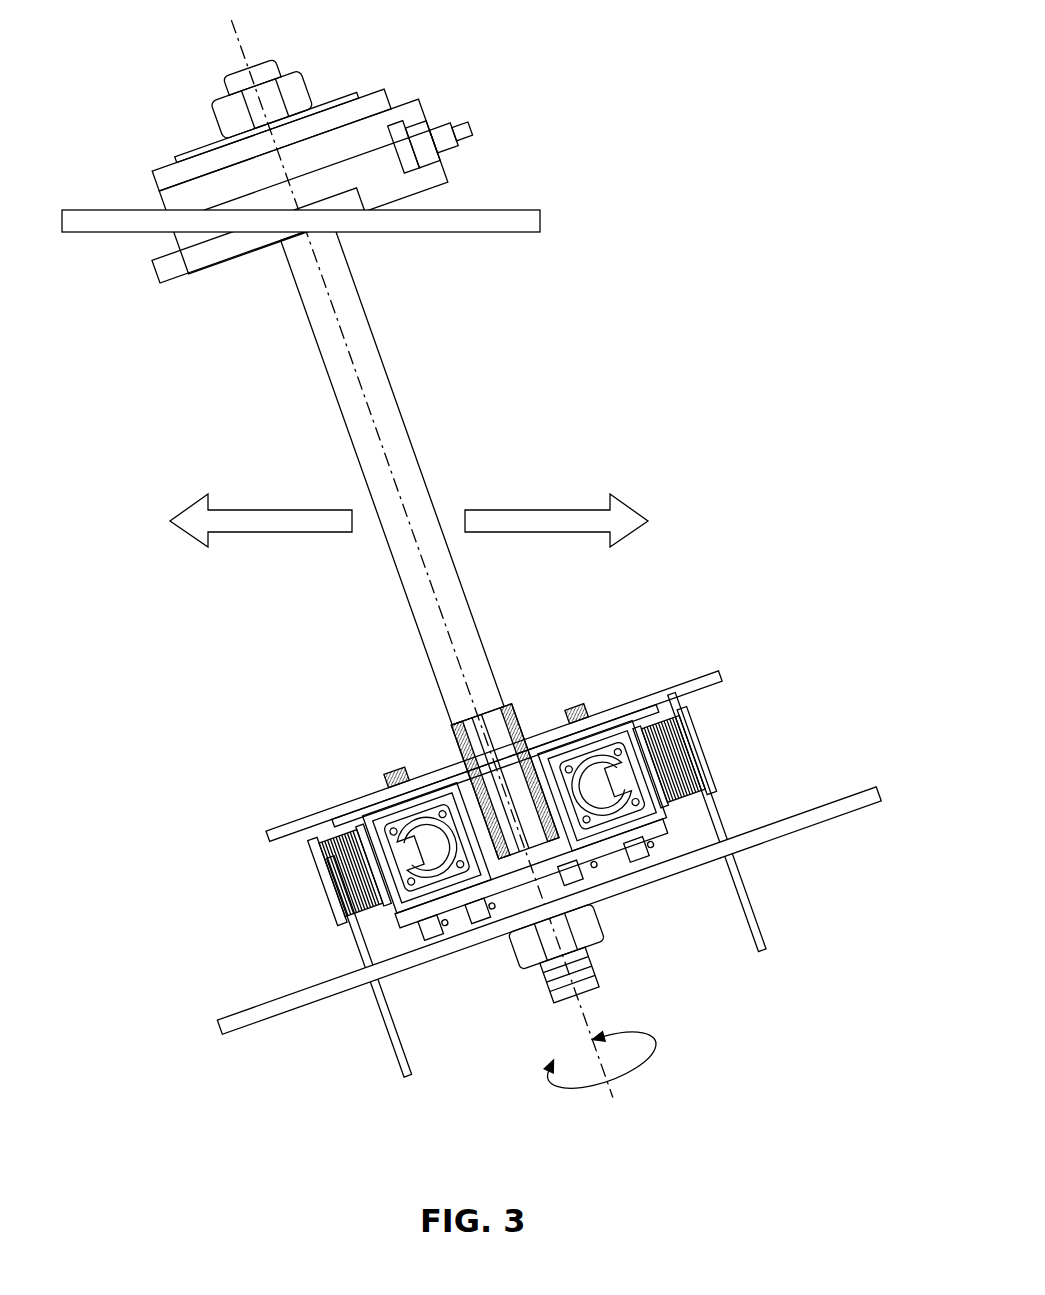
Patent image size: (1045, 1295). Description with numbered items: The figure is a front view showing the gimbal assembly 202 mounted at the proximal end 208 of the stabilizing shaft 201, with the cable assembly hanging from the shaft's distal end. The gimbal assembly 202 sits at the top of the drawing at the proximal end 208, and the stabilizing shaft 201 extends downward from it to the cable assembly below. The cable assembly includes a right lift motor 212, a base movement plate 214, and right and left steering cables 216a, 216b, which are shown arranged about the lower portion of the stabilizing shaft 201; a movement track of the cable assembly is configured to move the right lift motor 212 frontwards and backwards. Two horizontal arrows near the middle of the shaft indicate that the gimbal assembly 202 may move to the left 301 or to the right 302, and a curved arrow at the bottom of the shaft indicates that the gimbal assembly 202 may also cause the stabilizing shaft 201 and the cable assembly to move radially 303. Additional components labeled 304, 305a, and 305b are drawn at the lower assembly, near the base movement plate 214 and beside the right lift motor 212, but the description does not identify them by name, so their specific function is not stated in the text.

The stabilizing shaft 201 is at (393, 424).
The gimbal assembly 202 is at (410, 95).
The proximal end of the stabilizing shaft 208 is at (279, 257).
The right lift motor 212 is at (592, 786).
The base movement plate 214 is at (292, 1015).
The right steering cable 216a is at (388, 1068).
The left steering cable 216b is at (752, 910).
The left movement direction 301 is at (165, 555).
The right movement direction 302 is at (655, 540).
The radial movement 303 is at (545, 1075).
The nut 304 is at (605, 940).
The bellows coupling 305a is at (350, 878).
The bellows coupling 305b is at (688, 760).